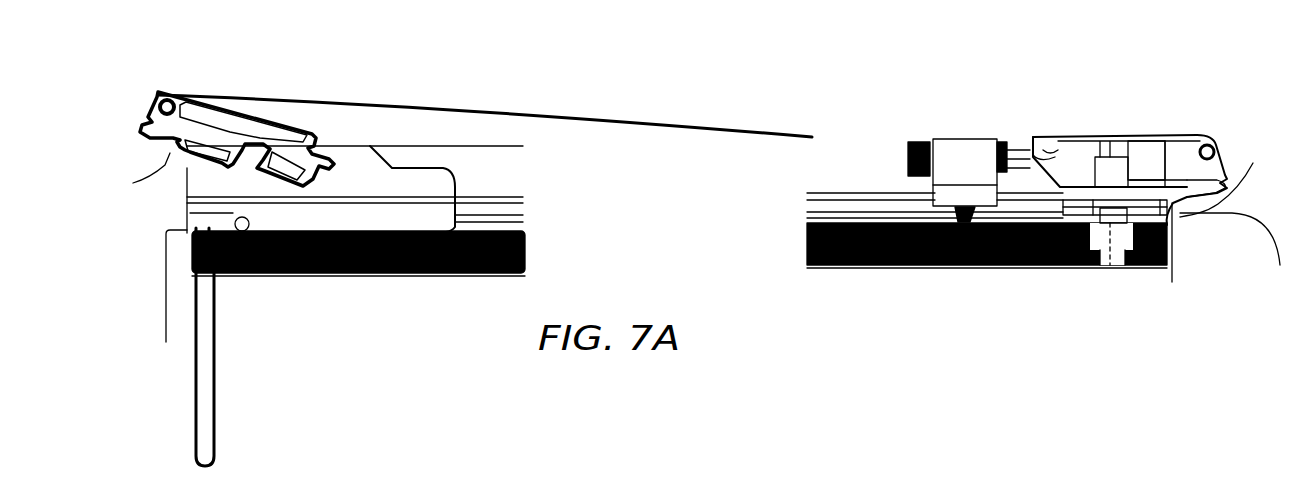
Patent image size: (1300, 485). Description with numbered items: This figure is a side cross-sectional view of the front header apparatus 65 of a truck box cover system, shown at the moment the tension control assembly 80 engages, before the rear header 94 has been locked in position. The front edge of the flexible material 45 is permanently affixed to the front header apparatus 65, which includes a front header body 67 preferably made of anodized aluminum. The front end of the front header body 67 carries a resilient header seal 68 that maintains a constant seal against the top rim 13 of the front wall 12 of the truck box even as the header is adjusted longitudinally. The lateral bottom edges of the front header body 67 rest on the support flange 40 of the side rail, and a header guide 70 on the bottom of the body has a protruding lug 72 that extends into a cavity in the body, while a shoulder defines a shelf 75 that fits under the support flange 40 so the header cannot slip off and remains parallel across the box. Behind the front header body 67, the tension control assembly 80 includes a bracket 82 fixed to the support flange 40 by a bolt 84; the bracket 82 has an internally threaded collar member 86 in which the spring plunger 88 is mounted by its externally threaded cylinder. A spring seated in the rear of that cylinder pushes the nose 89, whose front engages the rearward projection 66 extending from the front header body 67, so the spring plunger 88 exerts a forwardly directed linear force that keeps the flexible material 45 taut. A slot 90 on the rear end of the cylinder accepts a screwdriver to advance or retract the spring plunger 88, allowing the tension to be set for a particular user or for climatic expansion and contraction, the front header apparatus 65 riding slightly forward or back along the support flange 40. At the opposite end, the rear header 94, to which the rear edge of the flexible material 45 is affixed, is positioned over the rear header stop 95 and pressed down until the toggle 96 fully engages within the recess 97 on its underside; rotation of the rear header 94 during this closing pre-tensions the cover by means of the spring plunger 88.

The front wall 12 is at (1248, 320).
The top rim 13 is at (1232, 207).
The support flange 40 is at (820, 198).
The flexible material 45 is at (553, 117).
The front header apparatus 65 is at (1112, 124).
The rearward projection 66 is at (1044, 143).
The front header body 67 is at (1140, 150).
The header seal 68 is at (1224, 190).
The header guide 70 is at (1040, 266).
The protruding lug 72 is at (1111, 172).
The shelf 75 is at (1085, 268).
The tension control assembly 80 is at (945, 126).
The bracket 82 is at (947, 195).
The bolt 84 is at (947, 211).
The internally threaded collar member 86 is at (968, 162).
The spring plunger 88 is at (912, 142).
The nose 89 is at (1040, 140).
The slot 90 is at (902, 158).
The rear header 94 is at (213, 118).
The rear header stop 95 is at (418, 170).
The toggle 96 is at (241, 188).
The recess 97 is at (273, 135).